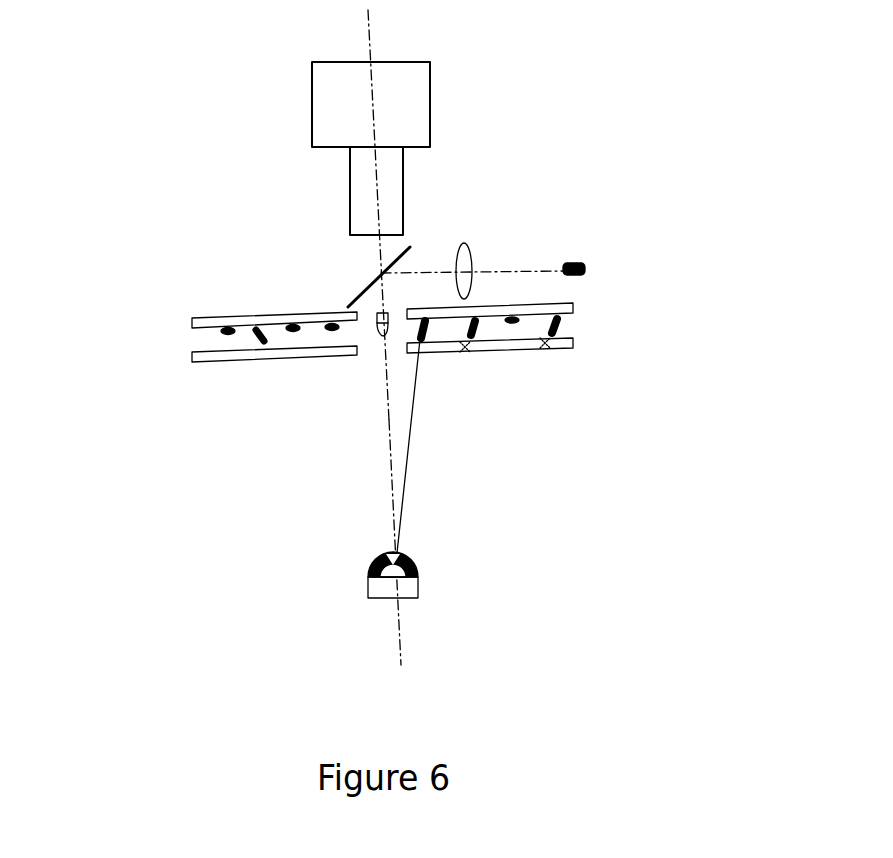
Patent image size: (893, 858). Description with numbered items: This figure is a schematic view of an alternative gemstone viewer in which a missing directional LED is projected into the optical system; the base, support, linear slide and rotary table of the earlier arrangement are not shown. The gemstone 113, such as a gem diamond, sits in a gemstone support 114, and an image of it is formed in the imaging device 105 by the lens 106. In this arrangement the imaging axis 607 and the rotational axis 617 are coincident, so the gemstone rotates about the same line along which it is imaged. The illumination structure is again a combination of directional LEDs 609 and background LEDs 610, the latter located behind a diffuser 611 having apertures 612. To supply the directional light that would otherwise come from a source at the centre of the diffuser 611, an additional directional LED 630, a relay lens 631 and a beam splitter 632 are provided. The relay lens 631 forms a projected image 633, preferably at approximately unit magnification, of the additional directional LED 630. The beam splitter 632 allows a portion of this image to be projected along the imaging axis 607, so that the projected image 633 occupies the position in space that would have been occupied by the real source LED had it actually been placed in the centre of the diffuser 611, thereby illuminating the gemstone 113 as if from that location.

The imaging device 105 is at (430, 103).
The lens 106 is at (403, 185).
The gemstone 113 is at (398, 554).
The gemstone support 114 is at (418, 592).
The imaging axis 607 is at (385, 386).
The directional LEDs 609 is at (485, 313).
The background LEDs 610 is at (333, 313).
The diffuser 611 is at (192, 357).
The apertures 612 is at (465, 352).
The rotational axis 617 is at (388, 475).
The additional directional LED 630 is at (580, 263).
The relay lens 631 is at (472, 245).
The beam splitter 632 is at (350, 300).
The projected image 633 is at (377, 337).